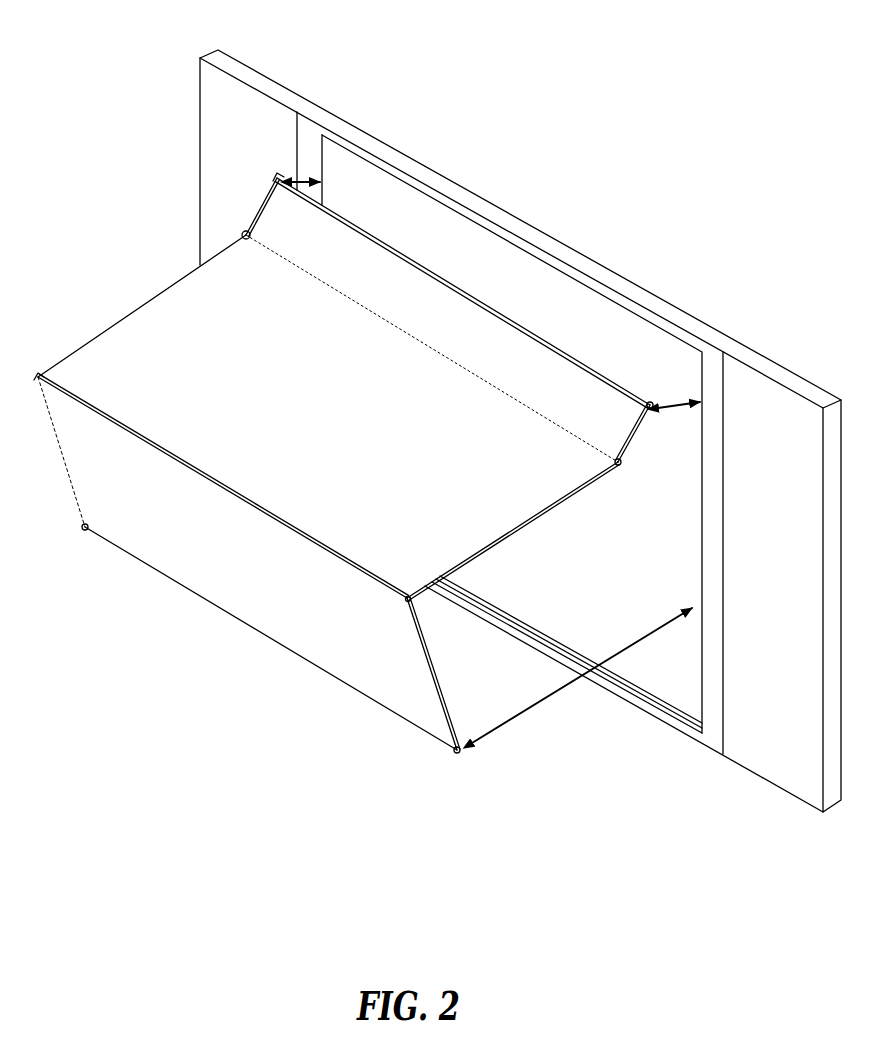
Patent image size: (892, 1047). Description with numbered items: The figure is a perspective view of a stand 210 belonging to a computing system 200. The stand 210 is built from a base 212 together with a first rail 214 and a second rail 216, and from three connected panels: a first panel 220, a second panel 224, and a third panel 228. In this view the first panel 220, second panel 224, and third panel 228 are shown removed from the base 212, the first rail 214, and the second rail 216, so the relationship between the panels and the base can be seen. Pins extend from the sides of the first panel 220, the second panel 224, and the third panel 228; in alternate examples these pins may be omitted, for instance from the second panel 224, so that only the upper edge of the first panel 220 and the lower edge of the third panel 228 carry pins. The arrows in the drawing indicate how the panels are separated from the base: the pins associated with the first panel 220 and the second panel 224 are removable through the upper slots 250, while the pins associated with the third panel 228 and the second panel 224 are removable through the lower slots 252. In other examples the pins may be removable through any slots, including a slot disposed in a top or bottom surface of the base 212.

The computing system 200 is at (217, 48).
The stand 210 is at (341, 463).
The base 212 is at (637, 537).
The first rail 214 is at (313, 153).
The second rail 216 is at (722, 427).
The first panel 220 is at (430, 293).
The second panel 224 is at (417, 443).
The third panel 228 is at (368, 618).
The upper slots 250 is at (705, 398).
The lower slots 252 is at (703, 600).